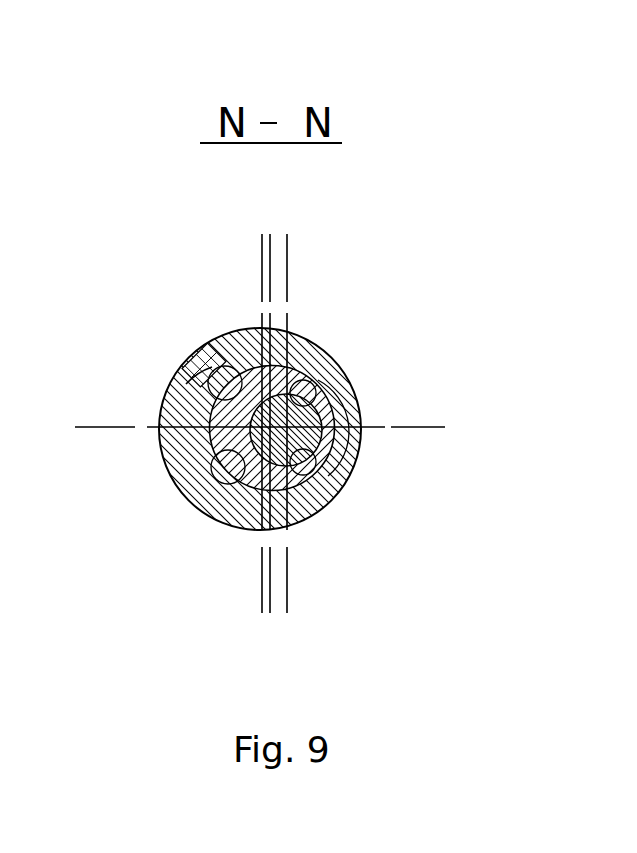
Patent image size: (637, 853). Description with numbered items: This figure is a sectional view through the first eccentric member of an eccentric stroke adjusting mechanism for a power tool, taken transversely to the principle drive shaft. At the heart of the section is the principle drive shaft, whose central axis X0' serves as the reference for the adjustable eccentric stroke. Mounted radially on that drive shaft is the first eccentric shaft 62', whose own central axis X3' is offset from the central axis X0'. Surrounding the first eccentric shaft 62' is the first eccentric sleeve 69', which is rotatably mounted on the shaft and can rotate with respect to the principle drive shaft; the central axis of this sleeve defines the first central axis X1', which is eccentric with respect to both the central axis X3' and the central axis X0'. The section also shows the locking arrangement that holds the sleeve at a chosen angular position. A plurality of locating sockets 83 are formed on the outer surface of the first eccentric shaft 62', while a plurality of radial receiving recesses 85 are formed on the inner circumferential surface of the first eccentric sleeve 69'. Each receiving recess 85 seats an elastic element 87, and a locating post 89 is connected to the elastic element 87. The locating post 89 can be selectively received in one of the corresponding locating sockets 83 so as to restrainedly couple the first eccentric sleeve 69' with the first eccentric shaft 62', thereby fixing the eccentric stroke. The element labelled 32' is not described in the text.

The first eccentric sleeve 69' is at (277, 421).
The locating socket 83 is at (200, 480).
The drive shaft sleeve 32' is at (269, 428).
The central axis of the principle drive shaft X0' is at (304, 438).
The radial receiving recess 85 is at (217, 342).
The elastic element 87 is at (190, 357).
The locating post 89 is at (222, 393).
The first eccentric shaft 62' is at (221, 513).
The first central axis X1' is at (194, 423).
The central axis of the first eccentric shaft X3' is at (325, 423).